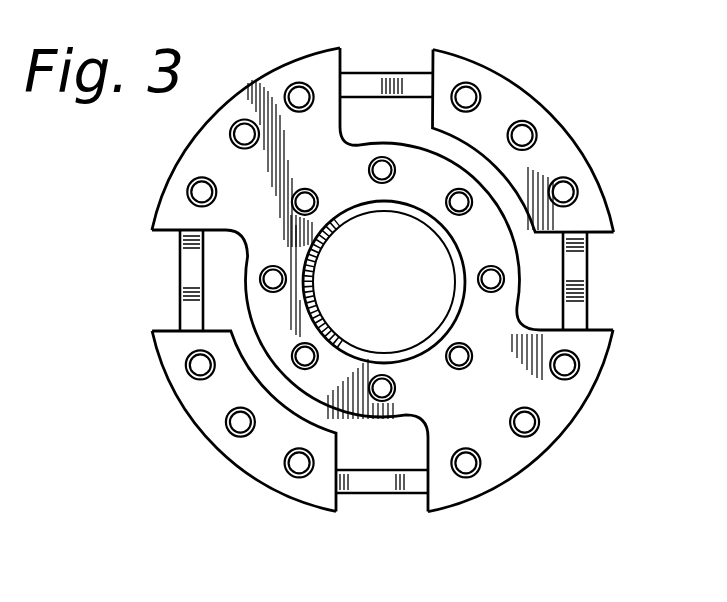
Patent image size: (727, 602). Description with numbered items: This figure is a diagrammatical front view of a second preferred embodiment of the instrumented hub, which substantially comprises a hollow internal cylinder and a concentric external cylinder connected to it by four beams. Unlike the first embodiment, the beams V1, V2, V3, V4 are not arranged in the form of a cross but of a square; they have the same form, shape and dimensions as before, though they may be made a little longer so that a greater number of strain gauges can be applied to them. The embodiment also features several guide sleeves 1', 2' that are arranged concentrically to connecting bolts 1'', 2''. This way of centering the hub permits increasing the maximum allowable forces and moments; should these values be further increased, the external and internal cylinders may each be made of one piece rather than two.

The beam V1 is at (186, 296).
The beam V2 is at (578, 305).
The beam V3 is at (386, 74).
The beam V4 is at (385, 494).
The guide sleeve 1' is at (517, 282).
The connecting bolt 1'' is at (391, 279).
The guide sleeve 2' is at (555, 151).
The connecting bolt 2'' is at (189, 163).